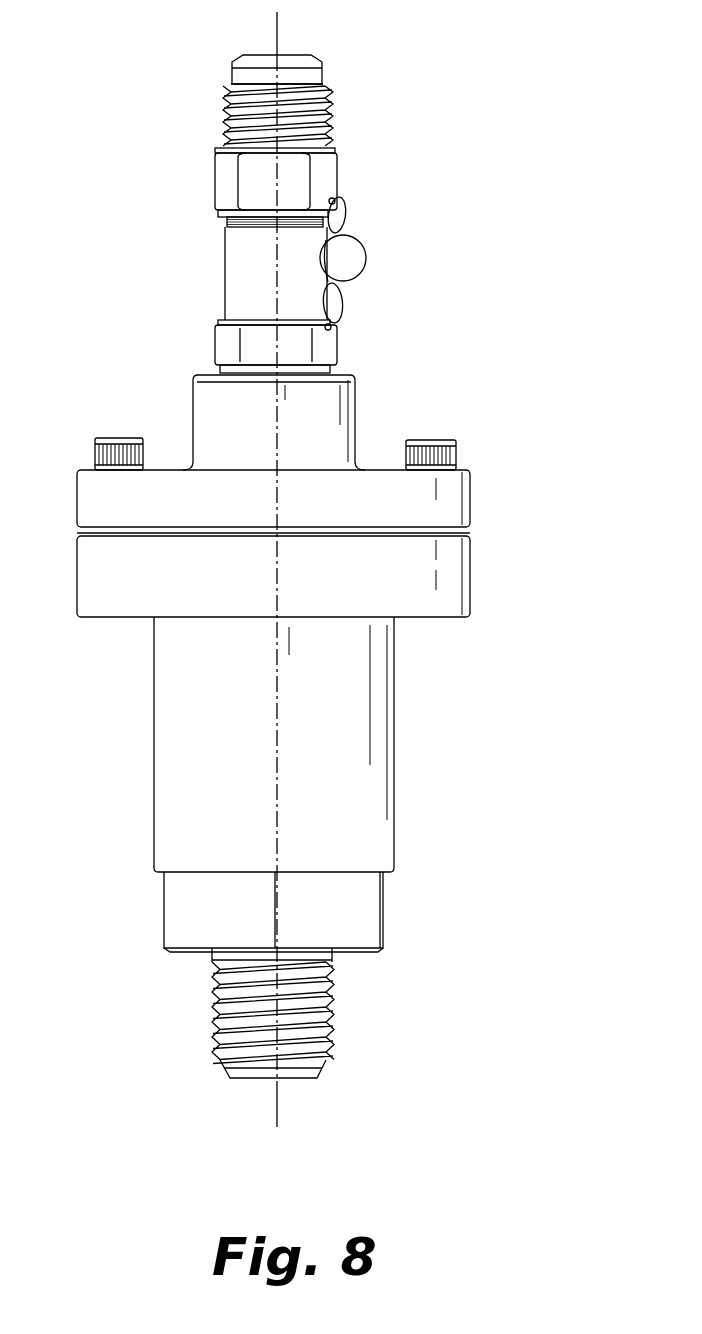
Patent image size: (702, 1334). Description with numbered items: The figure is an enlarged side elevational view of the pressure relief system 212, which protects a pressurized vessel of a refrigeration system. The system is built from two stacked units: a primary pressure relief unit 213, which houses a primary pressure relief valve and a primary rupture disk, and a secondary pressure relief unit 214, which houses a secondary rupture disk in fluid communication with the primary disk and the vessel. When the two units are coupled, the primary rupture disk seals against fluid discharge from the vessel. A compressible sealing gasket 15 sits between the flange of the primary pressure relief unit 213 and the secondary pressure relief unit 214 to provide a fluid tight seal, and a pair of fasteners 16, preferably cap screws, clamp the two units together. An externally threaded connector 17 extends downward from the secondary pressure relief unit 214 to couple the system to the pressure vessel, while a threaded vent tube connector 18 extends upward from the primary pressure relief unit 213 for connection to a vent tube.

The threaded vent tube connector 18 is at (332, 78).
The pressure relief system 212 is at (458, 284).
The primary pressure relief unit 213 is at (325, 348).
The sealing gasket 15 is at (470, 532).
The fasteners 16 is at (106, 438).
The secondary pressure relief unit 214 is at (355, 812).
The externally threaded connector 17 is at (292, 1070).